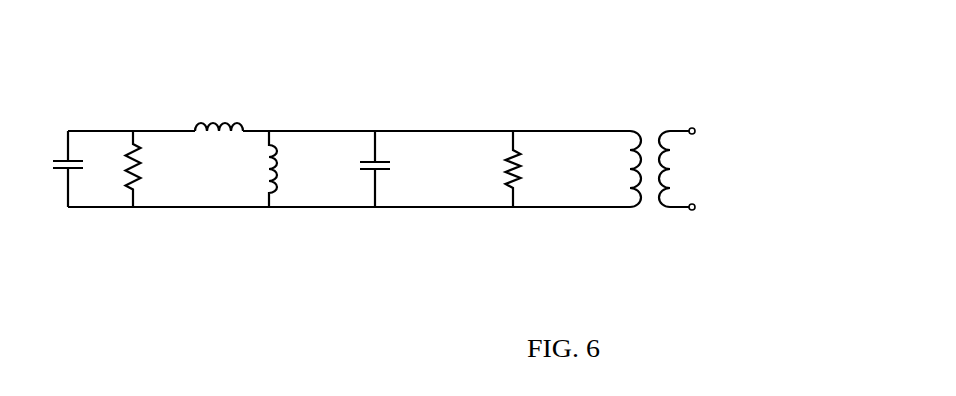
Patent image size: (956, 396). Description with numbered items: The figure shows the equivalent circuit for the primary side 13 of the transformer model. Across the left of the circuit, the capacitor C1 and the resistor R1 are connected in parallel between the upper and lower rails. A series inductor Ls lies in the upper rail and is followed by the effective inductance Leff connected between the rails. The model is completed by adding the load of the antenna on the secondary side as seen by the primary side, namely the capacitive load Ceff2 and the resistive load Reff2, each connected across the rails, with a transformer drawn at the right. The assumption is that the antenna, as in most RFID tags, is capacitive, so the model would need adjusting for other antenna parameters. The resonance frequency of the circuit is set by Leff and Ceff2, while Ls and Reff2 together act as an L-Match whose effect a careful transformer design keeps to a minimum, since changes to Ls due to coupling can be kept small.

The equivalent circuit for primary side 13 is at (347, 197).
The capacitor C1 is at (80, 169).
The resistor R1 is at (147, 169).
The series inductor Ls is at (219, 118).
The effective inductance Leff is at (288, 169).
The effective capacitive load Ceff2 is at (396, 169).
The effective resistive load Reff2 is at (535, 169).